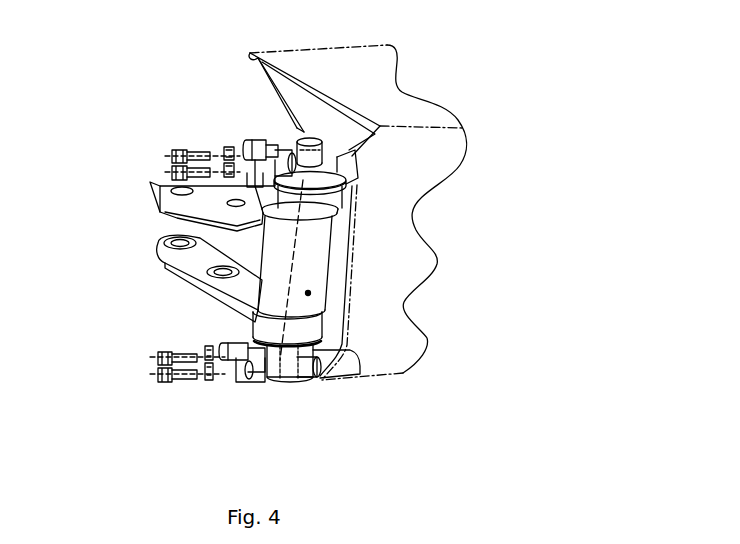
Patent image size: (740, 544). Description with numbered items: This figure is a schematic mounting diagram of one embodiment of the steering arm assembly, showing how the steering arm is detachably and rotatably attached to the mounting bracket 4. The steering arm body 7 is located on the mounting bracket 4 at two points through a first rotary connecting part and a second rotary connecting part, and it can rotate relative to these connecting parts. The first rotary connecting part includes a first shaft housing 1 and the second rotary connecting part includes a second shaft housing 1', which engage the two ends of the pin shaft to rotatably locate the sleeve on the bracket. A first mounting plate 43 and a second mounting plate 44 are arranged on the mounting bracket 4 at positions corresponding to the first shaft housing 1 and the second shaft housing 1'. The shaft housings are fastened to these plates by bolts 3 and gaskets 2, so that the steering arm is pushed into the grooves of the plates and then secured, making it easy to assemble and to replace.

The first shaft housing 1 is at (230, 118).
The second shaft housing 1' is at (238, 391).
The gasket 2 is at (225, 165).
The bolt 3 is at (162, 183).
The mounting bracket 4 is at (363, 358).
The steering arm body 7 is at (288, 278).
The first mounting plate 43 is at (337, 157).
The second mounting plate 44 is at (308, 358).